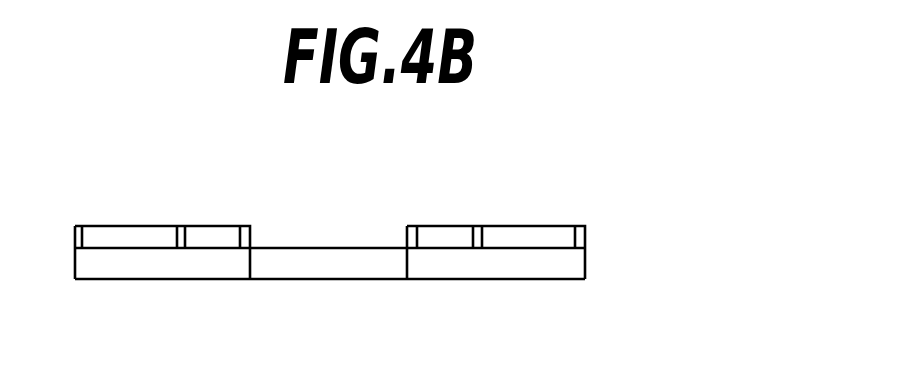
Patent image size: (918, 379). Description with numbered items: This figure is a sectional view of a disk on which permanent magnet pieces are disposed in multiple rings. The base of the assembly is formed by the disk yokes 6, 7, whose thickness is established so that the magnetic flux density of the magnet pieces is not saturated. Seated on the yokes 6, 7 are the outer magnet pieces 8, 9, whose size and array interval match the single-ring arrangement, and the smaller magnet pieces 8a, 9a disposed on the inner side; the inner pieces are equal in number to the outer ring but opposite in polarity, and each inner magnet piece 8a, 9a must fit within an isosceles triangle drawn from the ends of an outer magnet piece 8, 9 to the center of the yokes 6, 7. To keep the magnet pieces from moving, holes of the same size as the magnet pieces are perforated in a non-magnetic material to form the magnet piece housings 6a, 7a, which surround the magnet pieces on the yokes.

The yoke 6 is at (395, 285).
The yoke 7 is at (555, 258).
The magnet piece housing 6a is at (685, 221).
The magnet piece housing 7a is at (580, 232).
The magnet piece 8 is at (496, 293).
The magnet piece 9 is at (508, 235).
The smaller magnet piece 8a is at (499, 189).
The smaller magnet piece 9a is at (462, 233).